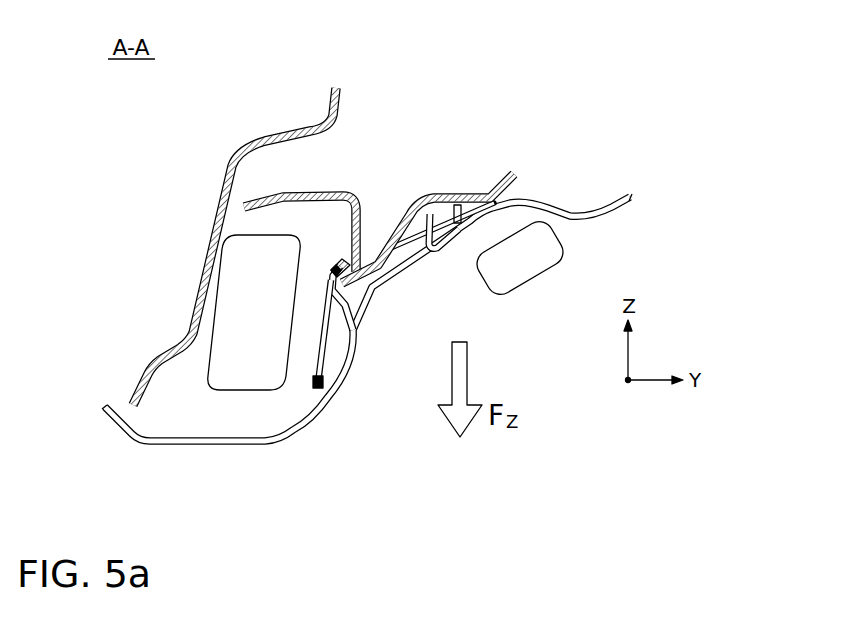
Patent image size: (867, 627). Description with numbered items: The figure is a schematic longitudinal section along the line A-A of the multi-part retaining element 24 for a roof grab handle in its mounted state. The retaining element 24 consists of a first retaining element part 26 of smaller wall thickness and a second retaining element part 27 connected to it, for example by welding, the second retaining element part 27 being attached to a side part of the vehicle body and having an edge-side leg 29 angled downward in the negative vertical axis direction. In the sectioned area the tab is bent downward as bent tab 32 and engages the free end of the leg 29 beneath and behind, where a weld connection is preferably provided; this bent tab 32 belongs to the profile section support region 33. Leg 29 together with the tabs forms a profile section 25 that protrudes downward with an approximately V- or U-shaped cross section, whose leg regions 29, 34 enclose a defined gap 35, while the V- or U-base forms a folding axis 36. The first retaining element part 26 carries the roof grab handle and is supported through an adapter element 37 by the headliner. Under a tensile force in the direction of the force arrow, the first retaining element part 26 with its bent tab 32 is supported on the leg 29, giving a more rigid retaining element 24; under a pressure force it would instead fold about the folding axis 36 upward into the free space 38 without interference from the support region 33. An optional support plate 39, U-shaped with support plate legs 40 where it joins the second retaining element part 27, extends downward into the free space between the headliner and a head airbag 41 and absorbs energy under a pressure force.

The retaining element 24 is at (444, 130).
The profile section 25 is at (378, 300).
The first retaining element part 26 is at (505, 185).
The second retaining element part 27 is at (281, 196).
The leg 29 is at (357, 222).
The bent tab 32 is at (383, 261).
The profile section support region 33 is at (364, 303).
The leg region 34 is at (408, 192).
The gap 35 is at (372, 251).
The folding axis 36 is at (244, 369).
The adapter element 37 is at (460, 222).
The free space 38 is at (459, 160).
The support plate 39 is at (318, 388).
The support plate legs 40 is at (336, 268).
The head airbag 41 is at (236, 318).